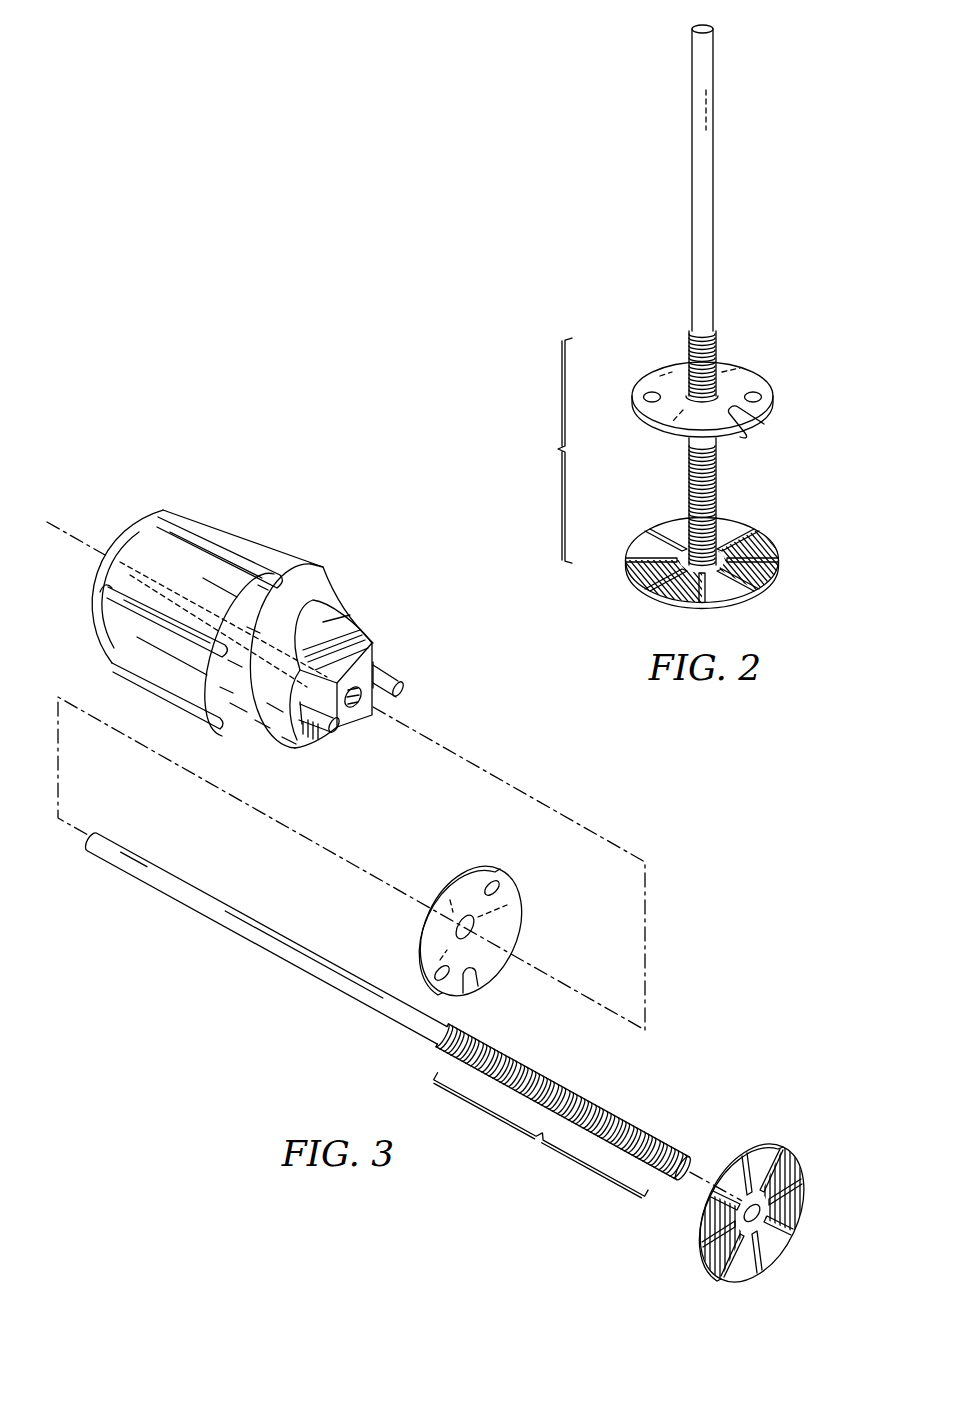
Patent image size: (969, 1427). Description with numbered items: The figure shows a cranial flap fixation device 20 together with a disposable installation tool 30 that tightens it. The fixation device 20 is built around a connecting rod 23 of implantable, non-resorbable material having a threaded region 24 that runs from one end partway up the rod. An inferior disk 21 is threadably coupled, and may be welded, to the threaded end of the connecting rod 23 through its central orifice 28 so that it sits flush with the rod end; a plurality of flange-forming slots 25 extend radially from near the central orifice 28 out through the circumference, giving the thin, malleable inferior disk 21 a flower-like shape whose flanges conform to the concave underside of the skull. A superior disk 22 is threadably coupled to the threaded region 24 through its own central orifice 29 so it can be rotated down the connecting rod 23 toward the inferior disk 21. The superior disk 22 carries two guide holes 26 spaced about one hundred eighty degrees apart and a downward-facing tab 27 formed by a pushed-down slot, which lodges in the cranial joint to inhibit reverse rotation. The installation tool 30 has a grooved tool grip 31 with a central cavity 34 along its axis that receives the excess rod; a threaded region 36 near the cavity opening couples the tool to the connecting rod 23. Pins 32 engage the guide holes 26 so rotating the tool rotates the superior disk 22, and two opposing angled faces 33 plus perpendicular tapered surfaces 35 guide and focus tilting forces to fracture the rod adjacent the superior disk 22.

In FIG. 2, the fixation device 20 is at (627, 270).
In FIG. 3, the fixation device 20 is at (596, 803).
In FIG. 2, the inferior disk 21 is at (698, 570).
In FIG. 3, the inferior disk 21 is at (766, 1212).
In FIG. 2, the superior disk 22 is at (689, 420).
In FIG. 3, the superior disk 22 is at (484, 931).
In FIG. 2, the connecting rod 23 is at (714, 140).
In FIG. 3, the connecting rod 23 is at (217, 888).
In FIG. 2, the threaded region 24 is at (620, 448).
In FIG. 3, the threaded region 24 is at (556, 1117).
In FIG. 2, the flange-forming slots 25 is at (648, 593).
In FIG. 2, the guide holes 26 is at (645, 390).
In FIG. 2, the tab 27 is at (742, 432).
In FIG. 3, the central orifice 28 is at (766, 1238).
In FIG. 3, the central orifice 29 is at (478, 973).
In FIG. 3, the installation tool 30 is at (240, 614).
In FIG. 3, the tool grip 31 is at (292, 550).
In FIG. 3, the pins 32 is at (405, 693).
In FIG. 3, the angled faces 33 is at (365, 637).
In FIG. 3, the central cavity 34 is at (103, 588).
In FIG. 3, the tapered surfaces 35 is at (373, 657).
In FIG. 3, the threaded region 36 is at (363, 714).